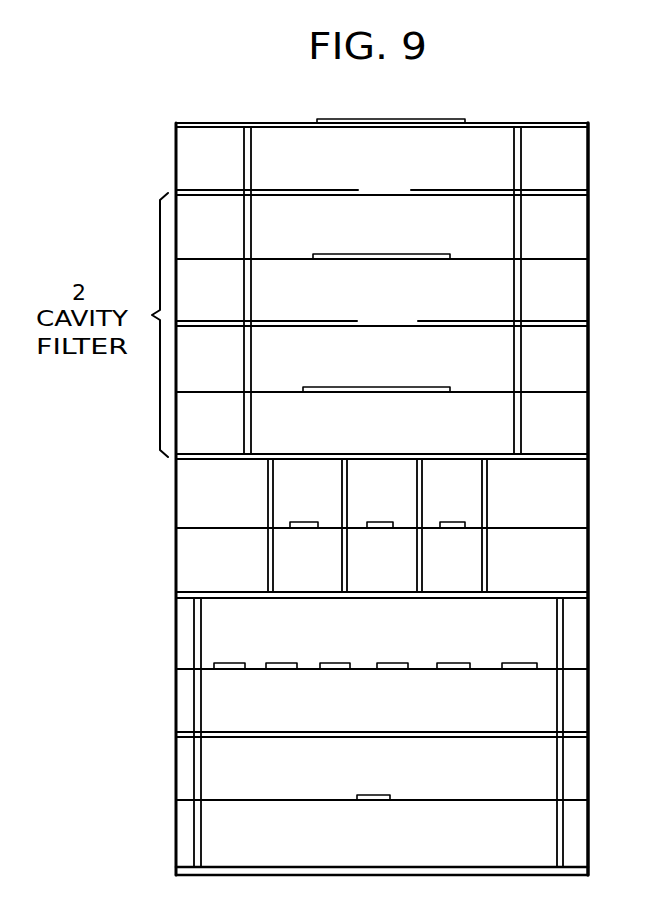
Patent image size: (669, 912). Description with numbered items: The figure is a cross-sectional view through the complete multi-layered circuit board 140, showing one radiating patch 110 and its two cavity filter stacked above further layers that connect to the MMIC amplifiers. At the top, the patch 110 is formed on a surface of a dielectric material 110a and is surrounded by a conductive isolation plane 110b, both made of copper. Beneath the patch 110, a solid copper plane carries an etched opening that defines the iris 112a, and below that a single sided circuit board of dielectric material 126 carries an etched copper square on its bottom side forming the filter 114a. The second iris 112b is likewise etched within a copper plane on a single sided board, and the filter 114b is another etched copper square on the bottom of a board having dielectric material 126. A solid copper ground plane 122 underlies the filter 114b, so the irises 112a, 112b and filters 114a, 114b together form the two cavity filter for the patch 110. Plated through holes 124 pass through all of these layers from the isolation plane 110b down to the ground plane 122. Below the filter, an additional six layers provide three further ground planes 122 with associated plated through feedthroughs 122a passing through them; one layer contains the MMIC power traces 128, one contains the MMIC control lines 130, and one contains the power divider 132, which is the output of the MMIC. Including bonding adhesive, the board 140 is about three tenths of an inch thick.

The patch 110 is at (382, 122).
The dielectric material 110a is at (193, 147).
The conductive isolation plane 110b is at (212, 122).
The iris 112a is at (378, 190).
The second iris 112b is at (386, 322).
The filter 114a is at (382, 253).
The filter 114b is at (393, 387).
The ground plane 122 is at (212, 460).
The plated through feedthroughs 122a is at (488, 562).
The plated through holes 124 is at (253, 153).
The dielectric material 126 is at (577, 230).
The MMIC power traces 128 is at (383, 521).
The MMIC control lines 130 is at (452, 662).
The power divider 132 is at (373, 795).
The multi-layered circuit board 140 is at (518, 77).